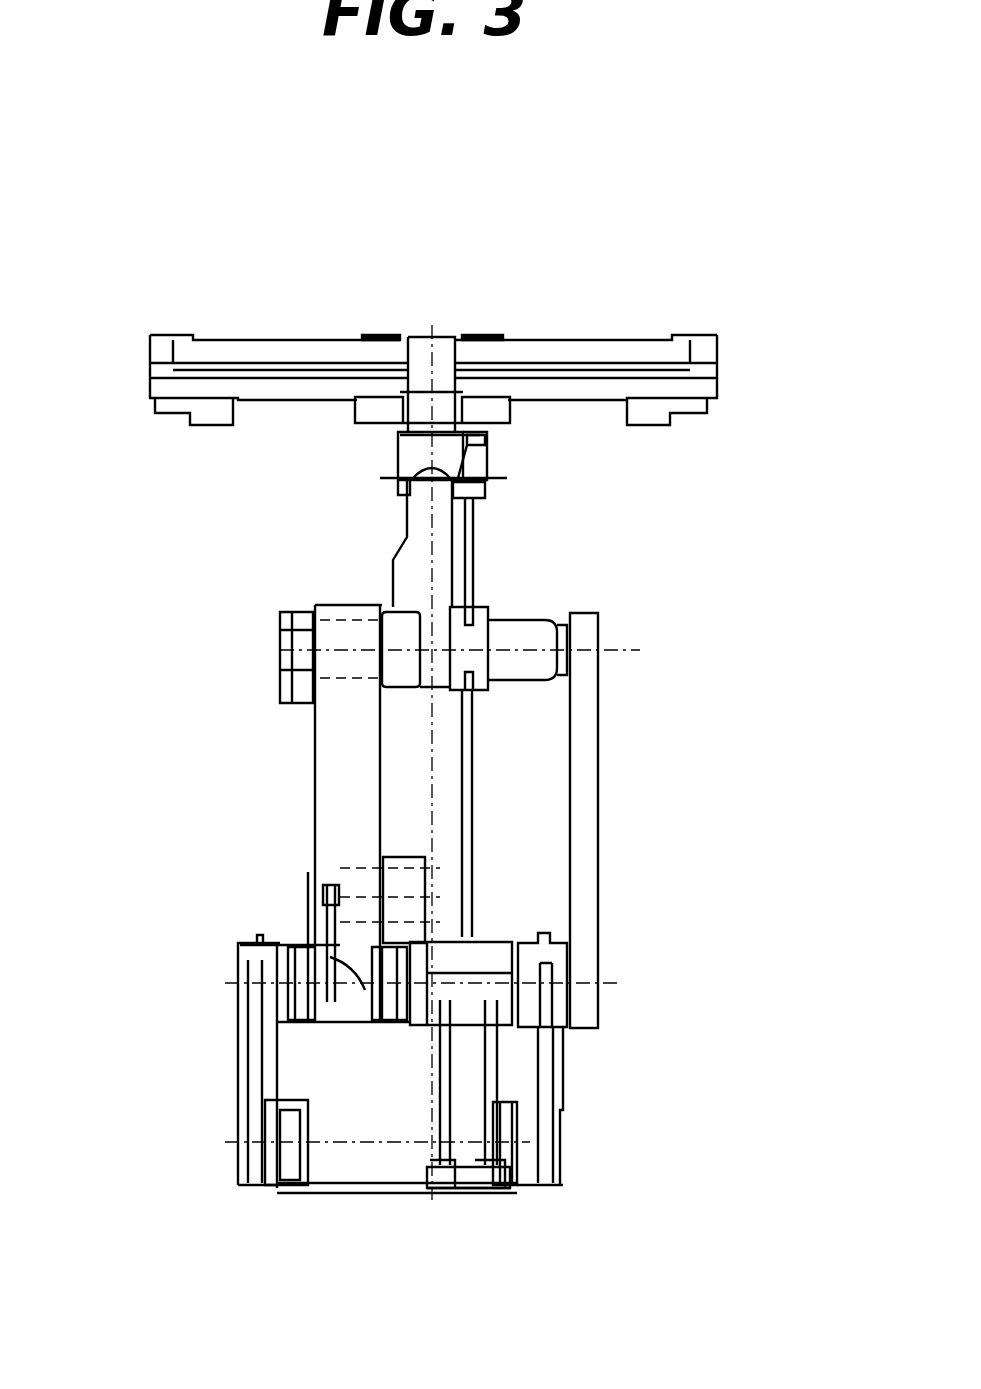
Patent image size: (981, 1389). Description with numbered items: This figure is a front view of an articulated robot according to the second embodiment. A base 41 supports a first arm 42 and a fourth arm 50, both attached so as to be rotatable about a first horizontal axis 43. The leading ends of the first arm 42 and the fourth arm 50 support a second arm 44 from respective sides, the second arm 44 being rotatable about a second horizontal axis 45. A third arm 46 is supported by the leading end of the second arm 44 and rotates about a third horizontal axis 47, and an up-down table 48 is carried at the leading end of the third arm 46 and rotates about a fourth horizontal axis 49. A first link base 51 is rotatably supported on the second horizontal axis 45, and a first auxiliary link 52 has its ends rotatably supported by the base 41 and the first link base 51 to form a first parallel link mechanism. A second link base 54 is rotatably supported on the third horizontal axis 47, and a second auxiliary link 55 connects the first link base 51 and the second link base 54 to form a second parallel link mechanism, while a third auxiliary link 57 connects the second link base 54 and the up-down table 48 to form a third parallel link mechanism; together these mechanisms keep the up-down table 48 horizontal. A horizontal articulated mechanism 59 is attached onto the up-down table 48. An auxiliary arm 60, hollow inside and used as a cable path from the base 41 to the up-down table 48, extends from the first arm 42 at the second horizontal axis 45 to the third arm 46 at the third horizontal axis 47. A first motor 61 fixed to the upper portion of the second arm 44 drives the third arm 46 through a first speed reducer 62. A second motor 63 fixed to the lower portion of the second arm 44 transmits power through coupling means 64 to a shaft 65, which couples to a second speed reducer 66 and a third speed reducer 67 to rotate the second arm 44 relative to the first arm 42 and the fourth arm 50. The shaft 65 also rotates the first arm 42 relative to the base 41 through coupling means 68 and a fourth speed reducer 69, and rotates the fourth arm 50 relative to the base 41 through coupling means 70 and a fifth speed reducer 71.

The base 41 is at (500, 1190).
The first arm 42 is at (532, 1055).
The first horizontal axis 43 is at (212, 1142).
The second arm 44 is at (332, 787).
The second horizontal axis 45 is at (625, 983).
The third arm 46 is at (407, 545).
The third horizontal axis 47 is at (645, 650).
The up-down table 48 is at (398, 447).
The fourth horizontal axis 49 is at (520, 472).
The fourth arm 50 is at (237, 1095).
The first link base 51 is at (470, 940).
The first auxiliary link 52 is at (440, 1085).
The second link base 54 is at (485, 625).
The second auxiliary link 55 is at (468, 830).
The third auxiliary link 57 is at (473, 566).
The horizontal articulated mechanism 59 is at (523, 334).
The auxiliary arm 60 is at (585, 843).
The first motor 61 is at (290, 640).
The first speed reducer 62 is at (410, 630).
The second motor 63 is at (337, 870).
The coupling means 64 is at (320, 912).
The shaft 65 is at (258, 937).
The second speed reducer 66 is at (363, 1020).
The third speed reducer 67 is at (278, 975).
The coupling means 68 is at (553, 1082).
The fourth speed reducer 69 is at (530, 1142).
The coupling means 70 is at (237, 1040).
The fifth speed reducer 71 is at (265, 1185).